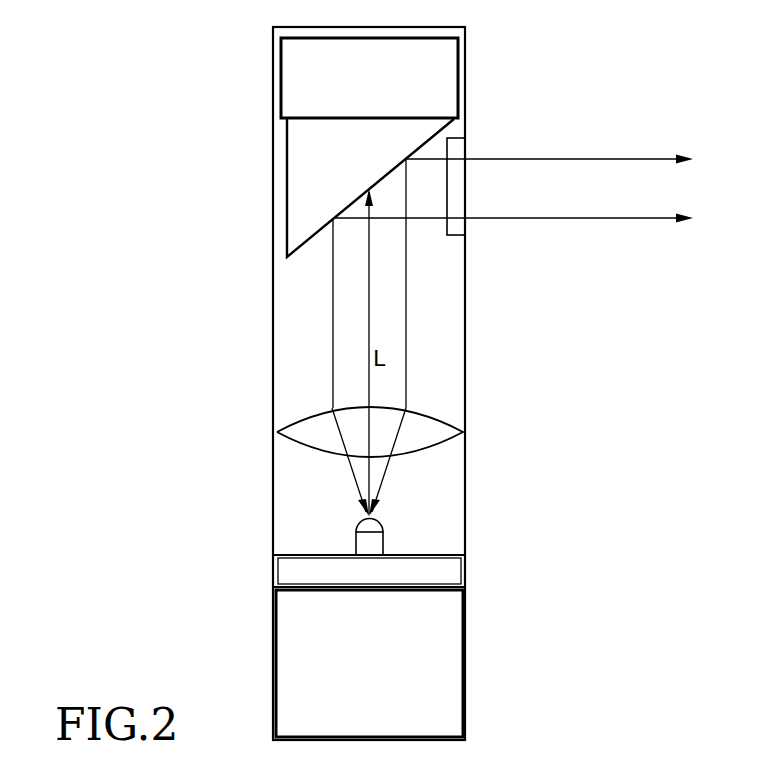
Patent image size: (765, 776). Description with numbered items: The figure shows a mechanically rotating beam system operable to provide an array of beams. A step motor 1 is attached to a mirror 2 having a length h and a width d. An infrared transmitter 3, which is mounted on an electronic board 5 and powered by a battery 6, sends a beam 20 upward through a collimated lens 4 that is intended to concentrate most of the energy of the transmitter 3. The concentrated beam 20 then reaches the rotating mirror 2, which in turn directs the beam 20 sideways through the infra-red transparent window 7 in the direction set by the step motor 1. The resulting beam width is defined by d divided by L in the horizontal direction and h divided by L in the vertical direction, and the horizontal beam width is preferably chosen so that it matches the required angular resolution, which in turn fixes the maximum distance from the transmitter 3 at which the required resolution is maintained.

The step motor 1 is at (282, 91).
The mirror 2 is at (288, 158).
The infrared transmitter 3 is at (381, 522).
The collimated lens 4 is at (310, 412).
The electronic board 5 is at (312, 552).
The battery 6 is at (424, 632).
The infra-red transparent window 7 is at (468, 178).
The beam 20 is at (513, 189).